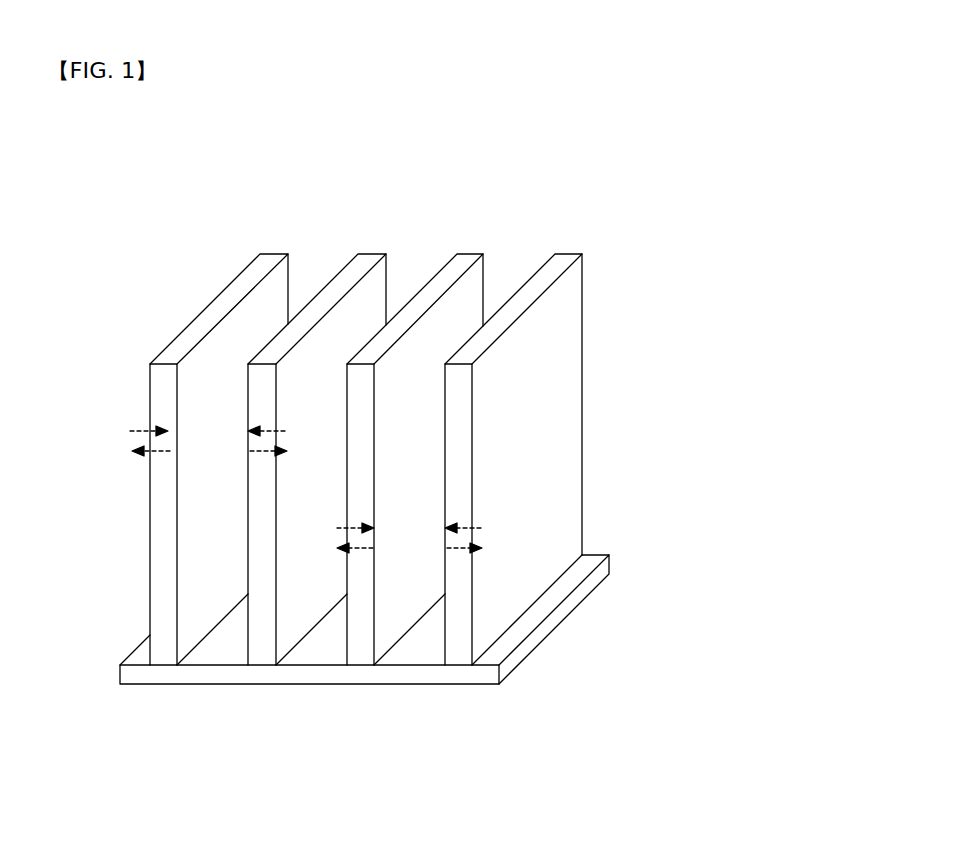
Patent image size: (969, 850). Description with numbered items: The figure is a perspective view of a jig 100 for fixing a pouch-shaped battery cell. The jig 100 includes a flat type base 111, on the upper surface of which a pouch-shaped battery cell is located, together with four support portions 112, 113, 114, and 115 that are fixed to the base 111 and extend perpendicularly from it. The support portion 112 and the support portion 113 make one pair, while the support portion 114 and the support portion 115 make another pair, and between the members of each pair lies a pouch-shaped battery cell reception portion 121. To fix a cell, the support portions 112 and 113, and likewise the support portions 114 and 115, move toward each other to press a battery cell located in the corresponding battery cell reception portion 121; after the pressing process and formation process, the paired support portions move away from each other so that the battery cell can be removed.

The jig 100 is at (132, 204).
The base 111 is at (606, 570).
The support portion 112 is at (262, 255).
The support portion 113 is at (355, 256).
The support portion 114 is at (458, 256).
The support portion 115 is at (563, 254).
The pouch-shaped battery cell reception portion 121 is at (212, 648).